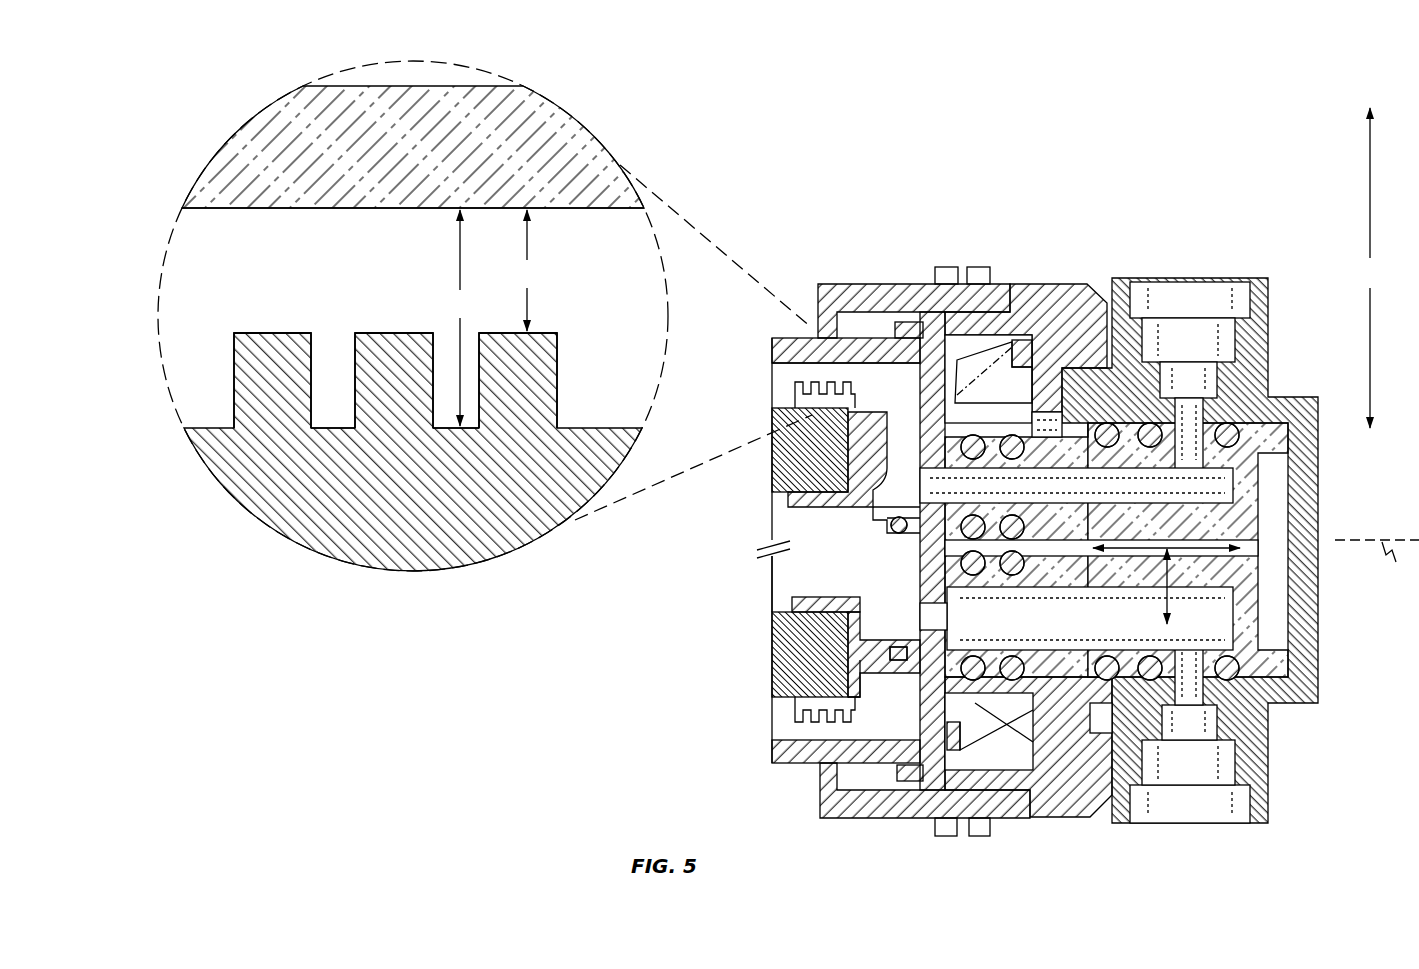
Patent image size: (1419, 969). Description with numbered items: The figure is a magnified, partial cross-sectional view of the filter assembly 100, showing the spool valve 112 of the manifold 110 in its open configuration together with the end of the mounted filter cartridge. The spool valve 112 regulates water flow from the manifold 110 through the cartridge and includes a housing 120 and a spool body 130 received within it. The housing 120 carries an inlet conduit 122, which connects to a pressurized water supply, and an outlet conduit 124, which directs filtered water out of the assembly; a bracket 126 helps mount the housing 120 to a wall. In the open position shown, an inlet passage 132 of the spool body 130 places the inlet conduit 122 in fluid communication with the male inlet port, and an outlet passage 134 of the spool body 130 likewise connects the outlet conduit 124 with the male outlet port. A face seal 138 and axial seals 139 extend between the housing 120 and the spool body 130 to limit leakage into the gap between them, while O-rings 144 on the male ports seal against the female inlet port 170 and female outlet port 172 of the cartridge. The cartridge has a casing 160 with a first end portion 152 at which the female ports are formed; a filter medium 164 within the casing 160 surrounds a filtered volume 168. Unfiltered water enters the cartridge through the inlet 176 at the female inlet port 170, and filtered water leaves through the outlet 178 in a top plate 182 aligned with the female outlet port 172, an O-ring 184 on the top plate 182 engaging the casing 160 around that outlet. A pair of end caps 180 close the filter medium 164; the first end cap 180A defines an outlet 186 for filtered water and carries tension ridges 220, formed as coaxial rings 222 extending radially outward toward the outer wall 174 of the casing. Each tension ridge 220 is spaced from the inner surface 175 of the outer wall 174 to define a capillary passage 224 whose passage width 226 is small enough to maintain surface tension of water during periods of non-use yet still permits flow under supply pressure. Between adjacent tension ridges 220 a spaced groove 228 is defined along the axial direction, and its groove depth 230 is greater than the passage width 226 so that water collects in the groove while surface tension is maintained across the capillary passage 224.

The filter assembly 100 is at (1066, 491).
The manifold 110 is at (1204, 550).
The spool valve 112 is at (1256, 548).
The housing 120 is at (1310, 405).
The inlet conduit 122 is at (1182, 300).
The outlet conduit 124 is at (1165, 815).
The bracket 126 is at (940, 828).
The spool body 130 is at (1250, 578).
The inlet passage 132 is at (1215, 487).
The outlet passage 134 is at (1205, 618).
The face seal 138 is at (1228, 432).
The axial seals 139 is at (1096, 722).
The O-rings 144 is at (1035, 435).
The first end portion 152 is at (857, 330).
The casing 160 is at (788, 753).
The filter medium 164 is at (790, 455).
The filtered volume 168 is at (788, 570).
The female inlet port 170 is at (995, 430).
The female outlet port 172 is at (978, 682).
The outer wall 174 is at (520, 150).
The inner surface 175 is at (318, 212).
The inlet 176 is at (918, 487).
The outlet 178 is at (923, 620).
The end caps 180 is at (802, 750).
The first end cap 180A is at (260, 480).
The top plate 182 is at (903, 752).
The O-ring 184 is at (900, 660).
The outlet 186 is at (840, 588).
The tension ridge 220 is at (205, 402).
The ring 222 is at (520, 392).
The capillary passage 224 is at (381, 276).
The passage width 226 is at (527, 270).
The spaced groove 228 is at (440, 362).
The groove depth 230 is at (460, 318).